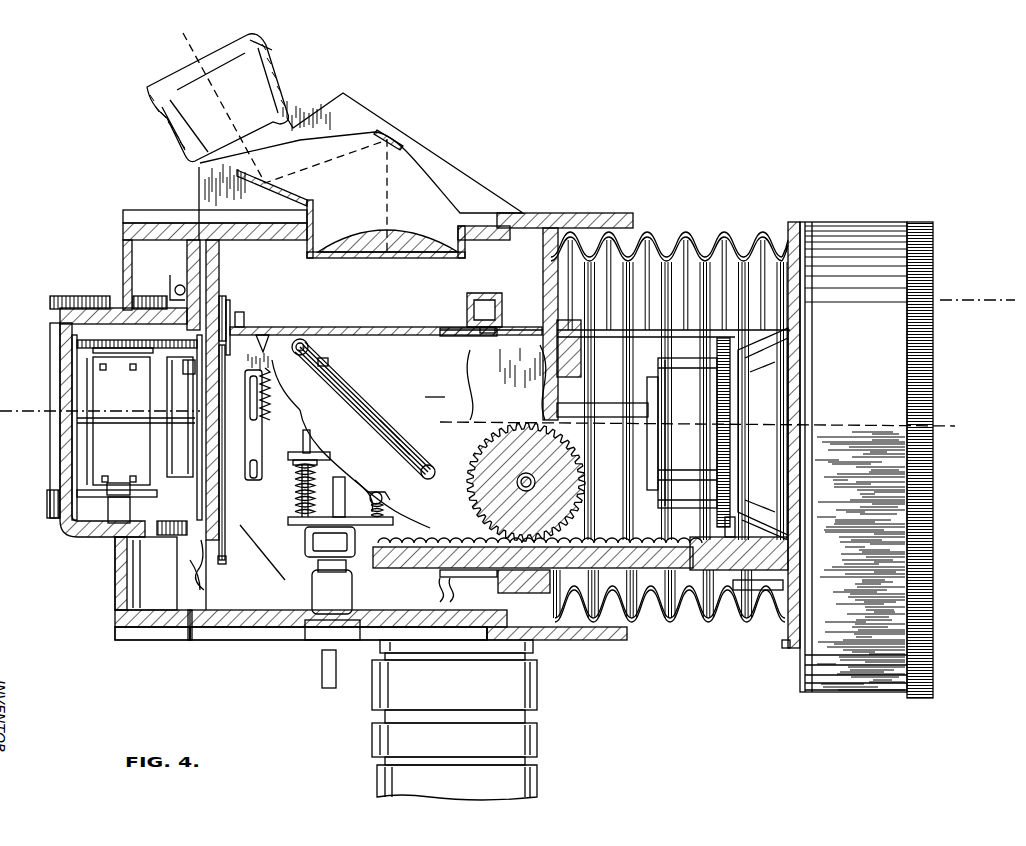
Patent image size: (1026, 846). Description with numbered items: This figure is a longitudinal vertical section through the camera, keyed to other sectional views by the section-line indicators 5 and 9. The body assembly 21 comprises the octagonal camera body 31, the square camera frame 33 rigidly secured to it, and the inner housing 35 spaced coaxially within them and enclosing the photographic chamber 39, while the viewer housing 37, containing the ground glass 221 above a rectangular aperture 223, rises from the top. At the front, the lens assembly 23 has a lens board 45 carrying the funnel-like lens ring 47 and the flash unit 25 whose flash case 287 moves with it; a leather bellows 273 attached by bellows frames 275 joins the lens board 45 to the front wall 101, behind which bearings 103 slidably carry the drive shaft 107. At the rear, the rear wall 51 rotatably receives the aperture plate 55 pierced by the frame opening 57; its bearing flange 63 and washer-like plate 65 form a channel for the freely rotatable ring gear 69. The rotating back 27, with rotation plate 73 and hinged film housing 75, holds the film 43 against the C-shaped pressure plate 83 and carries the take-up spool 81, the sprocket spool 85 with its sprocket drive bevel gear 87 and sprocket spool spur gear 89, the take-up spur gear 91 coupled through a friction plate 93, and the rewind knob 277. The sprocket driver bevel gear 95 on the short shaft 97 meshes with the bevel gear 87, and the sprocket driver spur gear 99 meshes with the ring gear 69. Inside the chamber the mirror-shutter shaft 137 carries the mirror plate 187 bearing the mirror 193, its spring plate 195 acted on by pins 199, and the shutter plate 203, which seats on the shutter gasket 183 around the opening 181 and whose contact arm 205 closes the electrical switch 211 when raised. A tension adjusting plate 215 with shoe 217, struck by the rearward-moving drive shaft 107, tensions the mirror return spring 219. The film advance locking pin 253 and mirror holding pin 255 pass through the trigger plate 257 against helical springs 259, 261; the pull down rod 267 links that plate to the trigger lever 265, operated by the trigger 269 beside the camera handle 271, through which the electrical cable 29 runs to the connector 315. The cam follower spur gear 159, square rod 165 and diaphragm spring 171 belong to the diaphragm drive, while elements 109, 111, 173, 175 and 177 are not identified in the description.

The section line 9- 9 is at (288, 160).
The section line 5- 5 is at (1000, 303).
The body assembly 21 is at (273, 650).
The lens assembly 23 is at (740, 240).
The flash unit 25 is at (843, 705).
The rotating back 27 is at (145, 645).
The multiple conductor electrical cable 29 is at (440, 590).
The camera body 31 is at (240, 627).
The camera frame 33 is at (577, 642).
The inner housing 35 is at (223, 540).
The viewer housing 37 is at (365, 112).
The photographic chamber 39 is at (435, 389).
The photographic film 43 is at (110, 421).
The lens board 45 is at (783, 655).
The lens ring 47 is at (775, 386).
The rear wall 51 is at (205, 632).
The aperture plate 55 is at (214, 335).
The frame opening 57 is at (197, 453).
The bearing flange 63 is at (185, 370).
The washer-like plate 65 is at (228, 310).
The ring gear 69 is at (222, 300).
The rotation plate 73 is at (192, 262).
The film housing 75 is at (62, 535).
The take-up spool 81 is at (95, 492).
The pressure plate 83 is at (170, 397).
The sprocket spool 85 is at (165, 462).
The sprocket drive bevel gear 87 is at (168, 536).
The sprocket spool spur gear 89 is at (178, 290).
The take-up spur gear 91 is at (72, 343).
The friction plate 93 is at (95, 352).
The sprocket driver bevel gear 95 is at (195, 566).
The shaft 97 is at (208, 580).
The sprocket driver spur gear 99 is at (224, 560).
The front wall 101 is at (543, 254).
The bearings 103 is at (498, 575).
The drive shaft 107 is at (675, 605).
The lower bellows 109 is at (640, 595).
The optical axis 111 is at (490, 422).
The mirror-shutter shaft 137 is at (300, 339).
The cam follower spur gear 159 is at (244, 312).
The square rod 165 is at (557, 408).
The helical diaphragm spring 171 is at (725, 530).
The bellows fold 173 is at (748, 300).
The bellows fold 175 is at (692, 285).
The bellows fold 177 is at (640, 330).
The rectangular opening 181 is at (328, 387).
The shutter gasket 183 is at (468, 472).
The mirror plate 187 is at (392, 432).
The mirror 193 is at (340, 382).
The spring plate 195 is at (324, 362).
The pins 199 is at (345, 335).
The shutter plate 203 is at (400, 446).
The contact arm 205 is at (423, 460).
The electrical switch 211 is at (490, 305).
The tension adjusting plate 215 is at (263, 340).
The shoe 217 is at (272, 562).
The mirror return spring 219 is at (268, 412).
The ground glass 221 is at (410, 258).
The rectangular aperture 223 is at (308, 343).
The film advance locking pin 253 is at (384, 492).
The mirror holding pin 255 is at (312, 446).
The trigger plate 257 is at (302, 430).
The helical spring 259 is at (390, 490).
The helical spring 261 is at (310, 540).
The trigger lever 265 is at (316, 580).
The pull down rod 267 is at (316, 472).
The trigger 269 is at (326, 682).
The camera handle 271 is at (540, 765).
The bellows 273 is at (750, 620).
The bellows frames 275 is at (790, 225).
The rewind knob 277 is at (65, 300).
The flash case 287 is at (905, 303).
The separable multiple conductor connector 315 is at (400, 745).